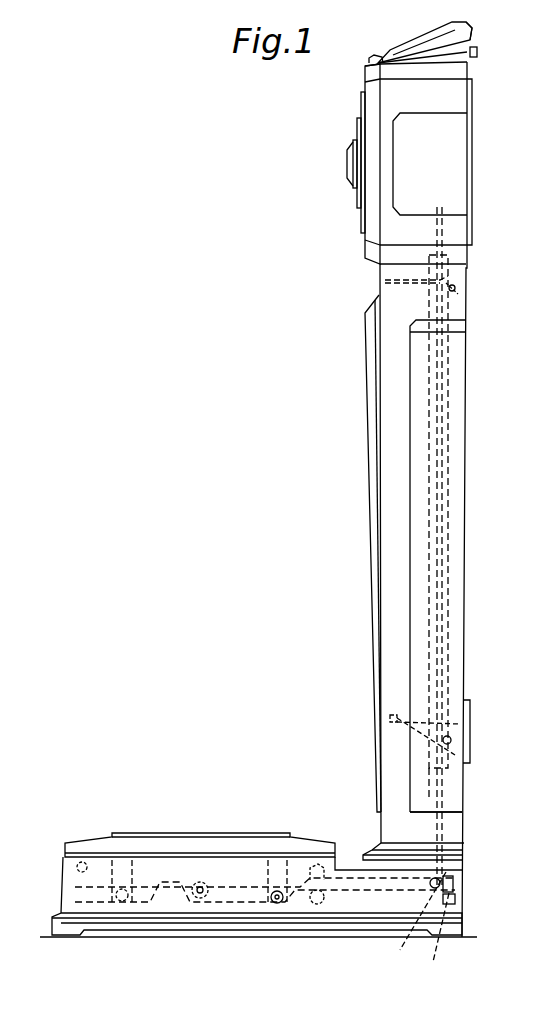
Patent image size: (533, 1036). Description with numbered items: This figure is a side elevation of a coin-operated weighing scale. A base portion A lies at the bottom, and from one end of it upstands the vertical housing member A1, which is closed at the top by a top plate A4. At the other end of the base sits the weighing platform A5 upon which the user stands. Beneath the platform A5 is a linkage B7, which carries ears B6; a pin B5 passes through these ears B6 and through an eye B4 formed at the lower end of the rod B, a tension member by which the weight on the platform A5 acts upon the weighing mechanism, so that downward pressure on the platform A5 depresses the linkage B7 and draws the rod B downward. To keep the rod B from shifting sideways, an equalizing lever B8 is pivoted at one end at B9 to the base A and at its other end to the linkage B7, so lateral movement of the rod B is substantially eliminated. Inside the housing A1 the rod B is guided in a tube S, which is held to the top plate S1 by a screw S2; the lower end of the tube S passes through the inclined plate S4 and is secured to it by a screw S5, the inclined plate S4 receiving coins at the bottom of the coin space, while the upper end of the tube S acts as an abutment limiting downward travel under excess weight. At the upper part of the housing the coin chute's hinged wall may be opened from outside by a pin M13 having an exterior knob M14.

The base portion A is at (330, 925).
The vertical housing member A1 is at (395, 412).
The top plate A4 is at (386, 60).
The weighing platform A5 is at (213, 843).
The pin M13 is at (471, 38).
The exterior knob M14 is at (478, 52).
The tube S is at (446, 608).
The top plate S1 is at (455, 281).
The screw S2 is at (458, 291).
The inclined plate S4 is at (425, 738).
The screw S5 is at (456, 742).
The rod B is at (440, 798).
The eye B4 is at (412, 924).
The pin B5 is at (441, 880).
The ears B6 is at (455, 882).
The linkage B7 is at (247, 887).
The equalizing lever B8 is at (457, 889).
The pivot B9 is at (433, 940).